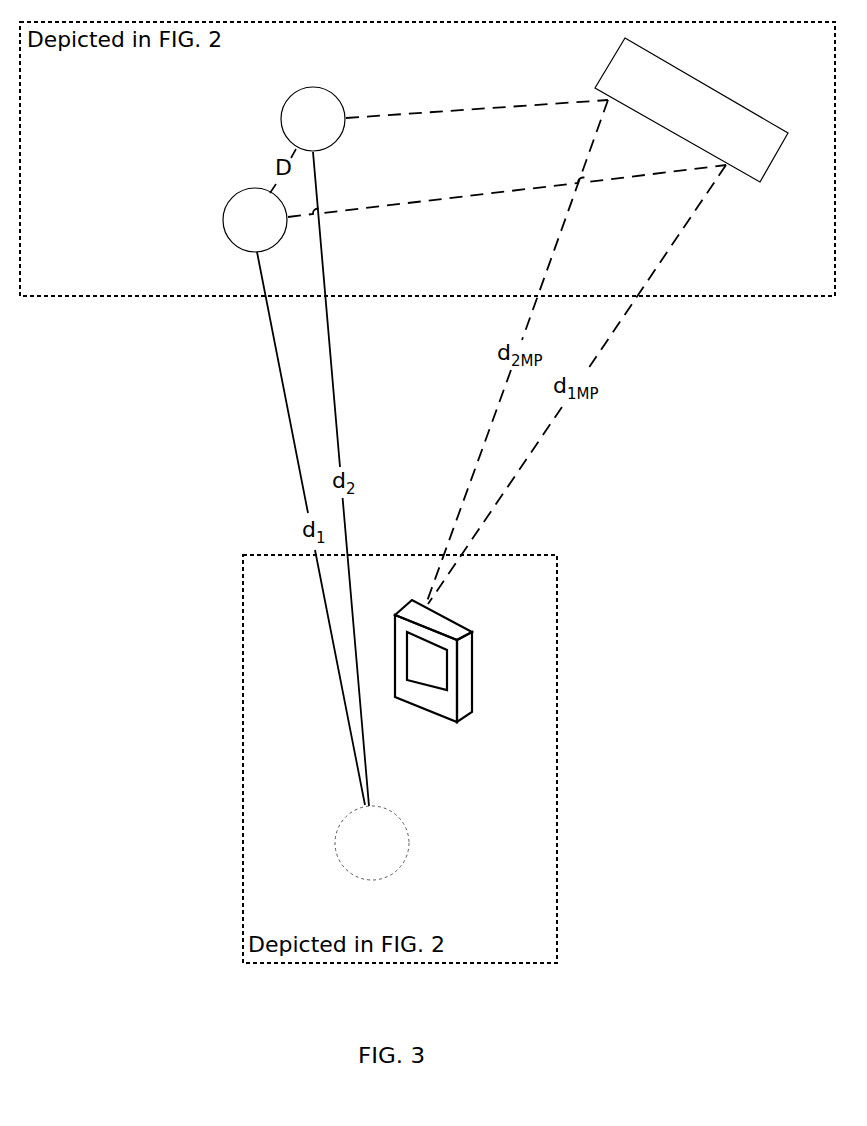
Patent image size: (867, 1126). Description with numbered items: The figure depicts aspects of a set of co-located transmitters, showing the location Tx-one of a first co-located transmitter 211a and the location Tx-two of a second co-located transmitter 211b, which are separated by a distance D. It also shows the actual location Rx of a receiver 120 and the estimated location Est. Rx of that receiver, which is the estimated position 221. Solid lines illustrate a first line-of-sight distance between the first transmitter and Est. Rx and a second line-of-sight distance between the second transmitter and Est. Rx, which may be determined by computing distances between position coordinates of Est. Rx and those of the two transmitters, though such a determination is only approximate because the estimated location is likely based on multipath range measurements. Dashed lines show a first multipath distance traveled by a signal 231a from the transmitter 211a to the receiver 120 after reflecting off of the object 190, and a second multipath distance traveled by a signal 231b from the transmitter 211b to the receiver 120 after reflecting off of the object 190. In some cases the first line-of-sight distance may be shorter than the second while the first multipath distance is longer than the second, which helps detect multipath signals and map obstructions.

The object 190 is at (705, 86).
The first co-located transmitter 211a is at (223, 220).
The second co-located transmitter 211b is at (312, 87).
The signal 231a is at (408, 204).
The signal 231b is at (405, 113).
The receiver 120 is at (468, 697).
The estimated position 221 is at (333, 838).